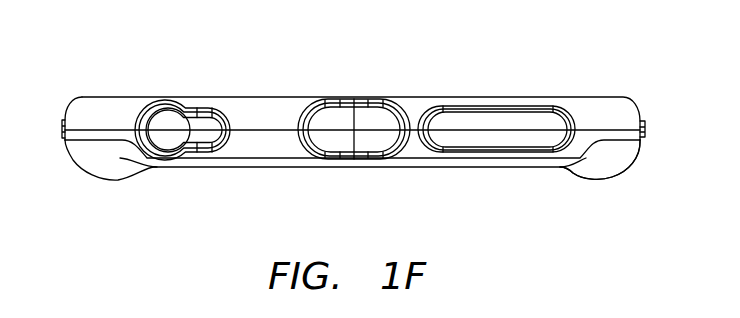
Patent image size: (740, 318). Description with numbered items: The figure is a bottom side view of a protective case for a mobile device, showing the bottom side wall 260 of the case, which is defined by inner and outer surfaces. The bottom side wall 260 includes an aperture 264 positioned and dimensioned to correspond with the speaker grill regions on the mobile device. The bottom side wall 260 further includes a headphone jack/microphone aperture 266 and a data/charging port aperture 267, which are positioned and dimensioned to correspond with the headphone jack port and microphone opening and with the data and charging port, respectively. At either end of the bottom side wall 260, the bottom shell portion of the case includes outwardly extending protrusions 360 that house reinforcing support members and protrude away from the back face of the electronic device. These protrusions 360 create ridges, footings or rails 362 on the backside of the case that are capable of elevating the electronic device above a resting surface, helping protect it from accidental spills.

The bottom side wall 260 is at (258, 138).
The aperture 264 is at (503, 127).
The headphone jack/microphone aperture 266 is at (173, 138).
The data/charging port aperture 267 is at (366, 120).
The outwardly extending protrusion 360 is at (102, 178).
The footing 362 is at (590, 178).